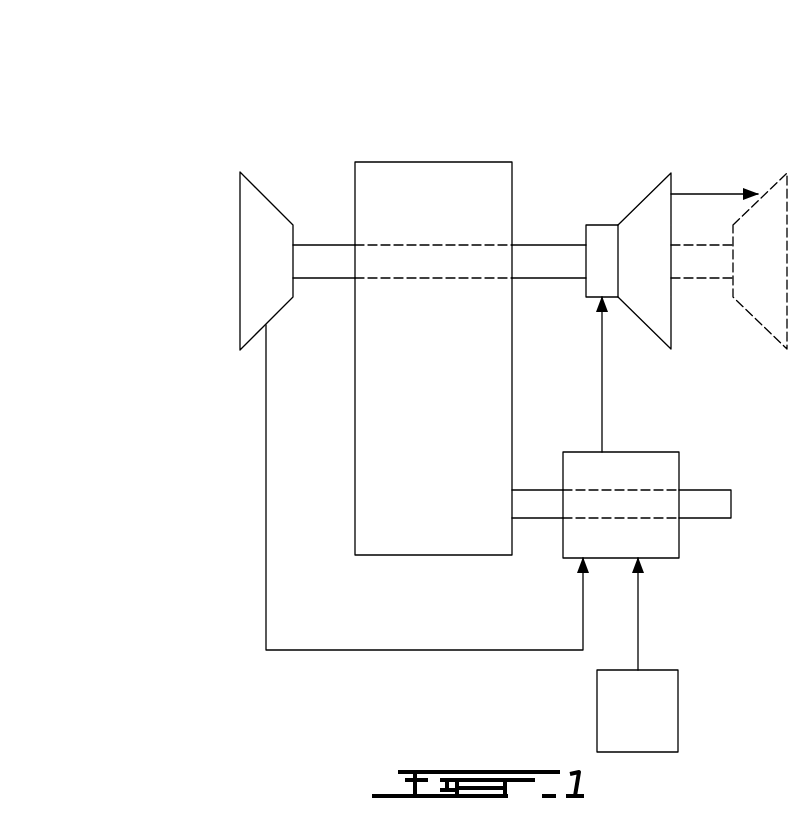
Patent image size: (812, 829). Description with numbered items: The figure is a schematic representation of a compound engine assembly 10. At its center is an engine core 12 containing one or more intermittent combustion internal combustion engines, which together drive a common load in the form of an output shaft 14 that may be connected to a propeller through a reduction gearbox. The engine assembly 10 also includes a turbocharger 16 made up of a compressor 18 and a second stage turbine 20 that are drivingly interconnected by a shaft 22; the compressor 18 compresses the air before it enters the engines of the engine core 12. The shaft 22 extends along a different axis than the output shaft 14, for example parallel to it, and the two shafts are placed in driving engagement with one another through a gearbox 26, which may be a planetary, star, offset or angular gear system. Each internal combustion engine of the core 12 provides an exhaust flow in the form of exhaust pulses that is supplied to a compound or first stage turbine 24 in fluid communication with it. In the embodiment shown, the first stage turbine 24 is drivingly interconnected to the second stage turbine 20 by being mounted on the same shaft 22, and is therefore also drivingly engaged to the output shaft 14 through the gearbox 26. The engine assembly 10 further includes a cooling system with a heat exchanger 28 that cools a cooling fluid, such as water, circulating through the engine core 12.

The compound engine assembly 10 is at (193, 113).
The engine core 12 is at (644, 452).
The output shaft 14 is at (712, 518).
The turbocharger 16 is at (308, 155).
The compressor 18 is at (240, 222).
The second stage turbine 20 is at (773, 182).
The shaft 22 is at (333, 255).
The first stage turbine 24 is at (642, 198).
The gearbox 26 is at (442, 162).
The heat exchanger 28 is at (678, 710).